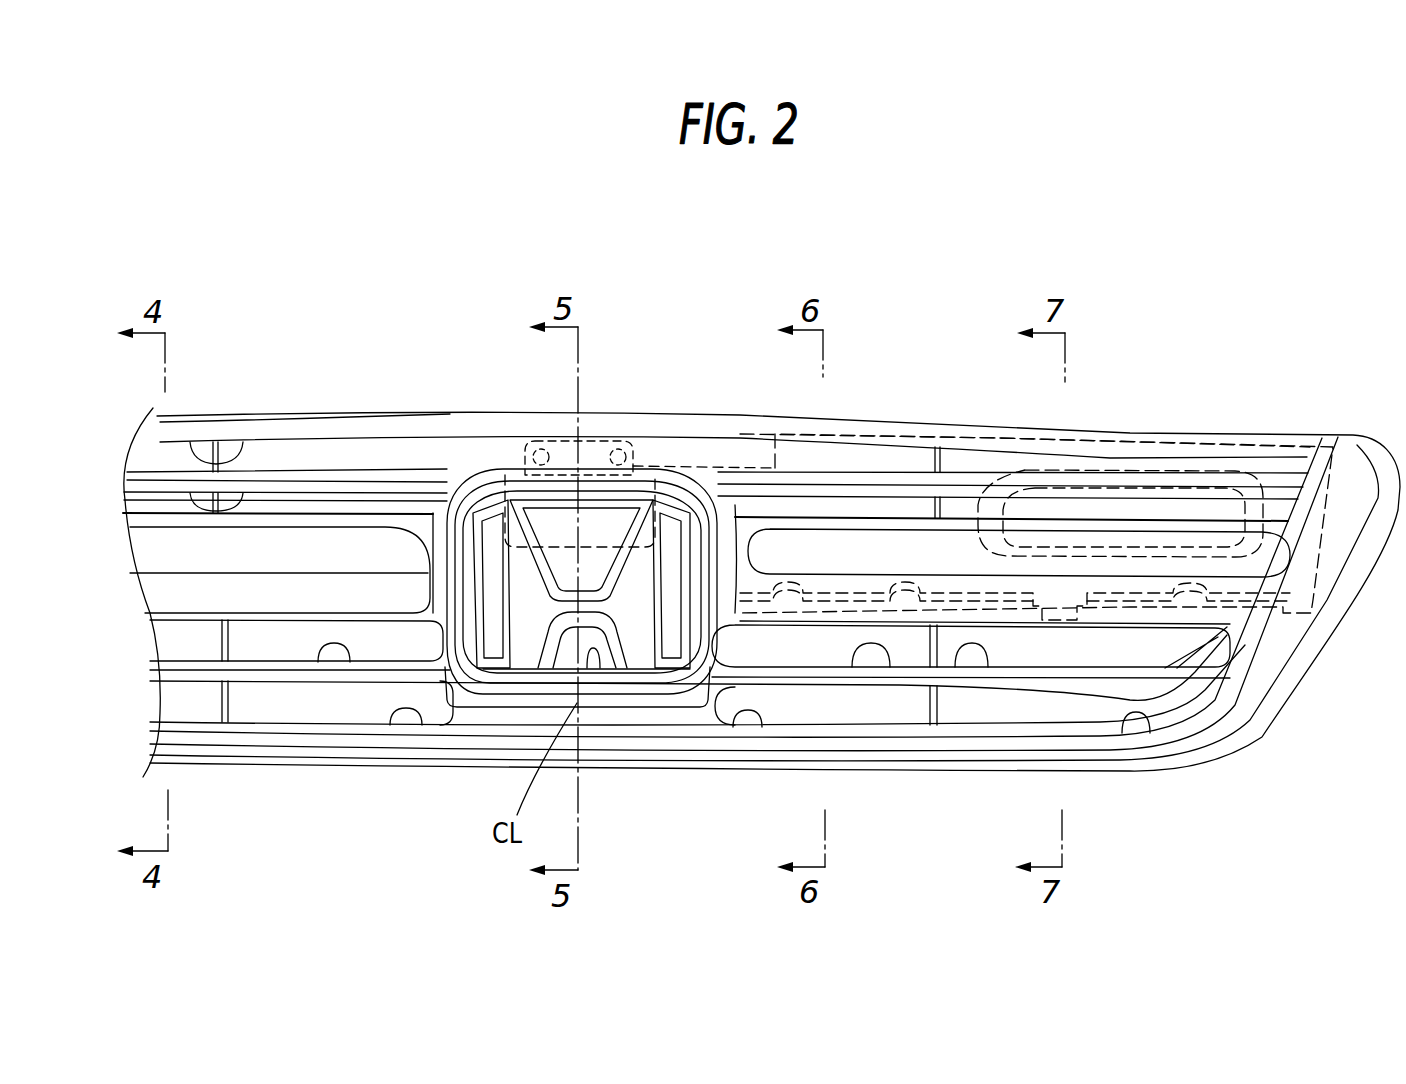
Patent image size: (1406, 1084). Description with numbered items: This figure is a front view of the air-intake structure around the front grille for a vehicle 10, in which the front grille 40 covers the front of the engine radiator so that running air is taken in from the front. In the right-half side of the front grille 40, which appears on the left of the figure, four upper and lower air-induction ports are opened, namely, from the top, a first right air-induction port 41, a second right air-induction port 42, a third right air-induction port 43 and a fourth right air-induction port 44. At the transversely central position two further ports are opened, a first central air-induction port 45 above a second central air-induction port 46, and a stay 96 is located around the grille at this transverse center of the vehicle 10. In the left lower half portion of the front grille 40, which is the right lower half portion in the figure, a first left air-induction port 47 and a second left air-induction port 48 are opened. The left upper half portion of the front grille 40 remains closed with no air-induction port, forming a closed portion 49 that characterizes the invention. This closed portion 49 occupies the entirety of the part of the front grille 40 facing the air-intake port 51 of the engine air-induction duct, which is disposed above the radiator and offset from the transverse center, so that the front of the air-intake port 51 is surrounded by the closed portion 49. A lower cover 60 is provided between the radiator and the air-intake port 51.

The vehicle 10 is at (1229, 266).
The front grille 40 is at (193, 385).
The first right air-induction port 41 is at (305, 418).
The second right air-induction port 42 is at (373, 418).
The third right air-induction port 43 is at (351, 662).
The fourth right air-induction port 44 is at (423, 725).
The first central air-induction port 45 is at (613, 505).
The second central air-induction port 46 is at (600, 668).
The first left air-induction port 47 is at (988, 667).
The second left air-induction port 48 is at (760, 727).
The closed portion 49 is at (1213, 514).
The air-intake port 51 is at (1141, 467).
The lower cover 60 is at (1167, 617).
The stay 96 is at (648, 455).